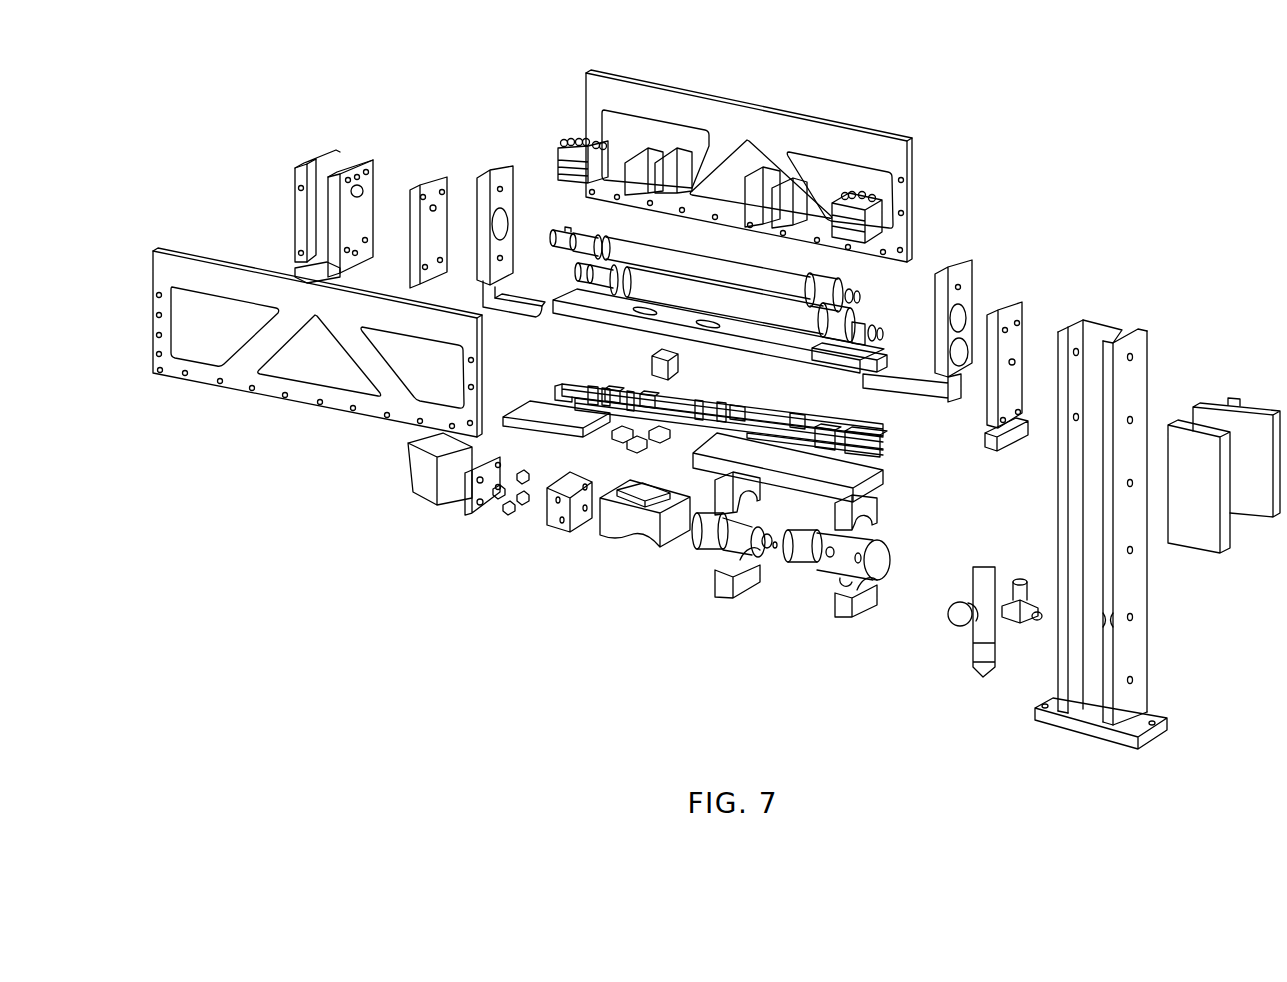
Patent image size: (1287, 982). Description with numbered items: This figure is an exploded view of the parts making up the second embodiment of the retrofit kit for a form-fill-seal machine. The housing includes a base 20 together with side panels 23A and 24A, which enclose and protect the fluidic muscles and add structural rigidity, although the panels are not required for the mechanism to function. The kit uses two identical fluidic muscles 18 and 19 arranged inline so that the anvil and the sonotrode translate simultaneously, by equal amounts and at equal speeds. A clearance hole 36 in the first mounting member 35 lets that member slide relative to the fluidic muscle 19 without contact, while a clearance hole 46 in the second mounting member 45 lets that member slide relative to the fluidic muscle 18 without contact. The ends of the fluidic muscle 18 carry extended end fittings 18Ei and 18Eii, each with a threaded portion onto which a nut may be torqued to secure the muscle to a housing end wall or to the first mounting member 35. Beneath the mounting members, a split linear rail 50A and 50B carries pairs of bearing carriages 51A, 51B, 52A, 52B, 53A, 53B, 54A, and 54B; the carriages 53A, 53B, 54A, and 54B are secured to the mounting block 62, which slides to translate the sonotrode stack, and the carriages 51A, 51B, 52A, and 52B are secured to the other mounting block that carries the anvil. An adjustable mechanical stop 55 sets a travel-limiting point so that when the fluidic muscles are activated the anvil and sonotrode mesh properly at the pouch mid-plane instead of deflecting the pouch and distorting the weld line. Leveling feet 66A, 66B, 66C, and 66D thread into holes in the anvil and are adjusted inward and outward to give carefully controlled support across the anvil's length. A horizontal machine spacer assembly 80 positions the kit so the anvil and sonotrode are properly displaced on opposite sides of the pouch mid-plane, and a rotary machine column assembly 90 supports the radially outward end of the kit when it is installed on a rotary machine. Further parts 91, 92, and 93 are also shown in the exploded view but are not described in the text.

The fluidic muscle 18 is at (732, 303).
The extended end fitting 18Ei is at (860, 294).
The tube end fitting 18Eii is at (577, 276).
The fluidic muscle 19 is at (608, 245).
The base 20 is at (572, 329).
The side plate 23A is at (237, 371).
The side plate 24A is at (737, 124).
The first mounting member 35 is at (486, 172).
The clearance hole 36 is at (504, 227).
The second mounting member 45 is at (952, 270).
The clearance hole 46 is at (961, 348).
The split linear rail 50A is at (837, 424).
The split linear rail 50B is at (797, 418).
The bearing carriage 51A is at (590, 383).
The bearing carriage 51B is at (563, 389).
The bearing carriage 52A is at (627, 392).
The bearing carriage 52B is at (608, 410).
The bearing carriage 53A is at (735, 417).
The bearing carriage 53B is at (697, 423).
The bearing carriage 54A is at (873, 450).
The bearing carriage 54B is at (873, 453).
The mechanical stop 55 is at (680, 366).
The mounting block 62 is at (883, 478).
The leveling foot 66A is at (507, 515).
The leveling foot 66B is at (500, 499).
The leveling foot 66C is at (523, 505).
The leveling foot 66D is at (526, 484).
The horizontal machine spacer assembly 80 is at (313, 153).
The rotary machine column assembly 90 is at (1090, 316).
The mounting plate 91 is at (1234, 398).
The sensor 92 is at (975, 675).
The sensor 93 is at (1026, 628).